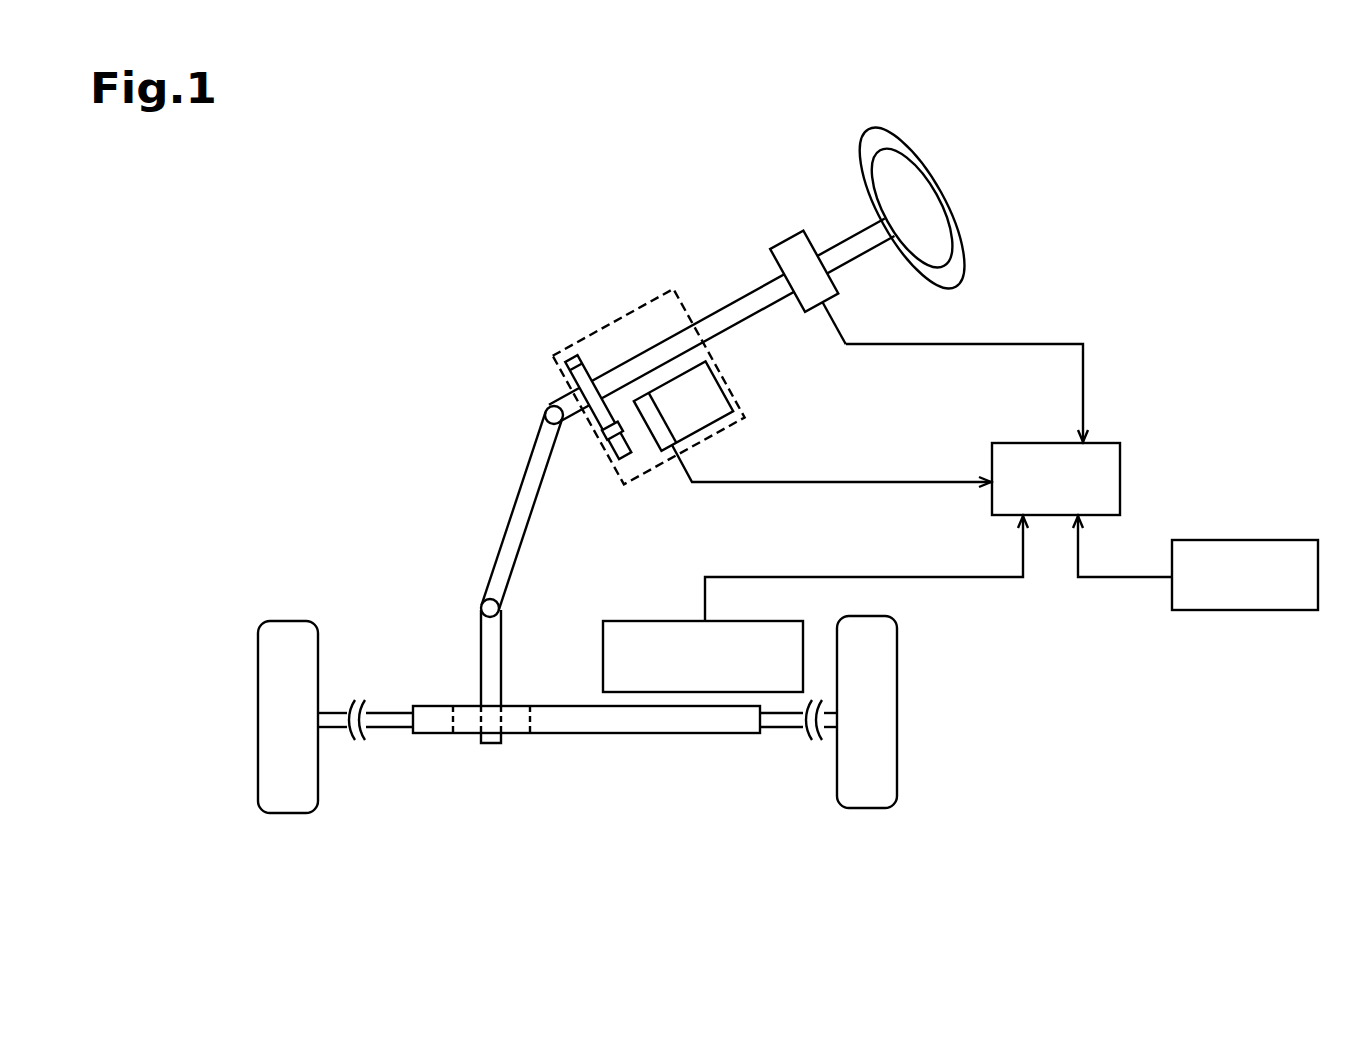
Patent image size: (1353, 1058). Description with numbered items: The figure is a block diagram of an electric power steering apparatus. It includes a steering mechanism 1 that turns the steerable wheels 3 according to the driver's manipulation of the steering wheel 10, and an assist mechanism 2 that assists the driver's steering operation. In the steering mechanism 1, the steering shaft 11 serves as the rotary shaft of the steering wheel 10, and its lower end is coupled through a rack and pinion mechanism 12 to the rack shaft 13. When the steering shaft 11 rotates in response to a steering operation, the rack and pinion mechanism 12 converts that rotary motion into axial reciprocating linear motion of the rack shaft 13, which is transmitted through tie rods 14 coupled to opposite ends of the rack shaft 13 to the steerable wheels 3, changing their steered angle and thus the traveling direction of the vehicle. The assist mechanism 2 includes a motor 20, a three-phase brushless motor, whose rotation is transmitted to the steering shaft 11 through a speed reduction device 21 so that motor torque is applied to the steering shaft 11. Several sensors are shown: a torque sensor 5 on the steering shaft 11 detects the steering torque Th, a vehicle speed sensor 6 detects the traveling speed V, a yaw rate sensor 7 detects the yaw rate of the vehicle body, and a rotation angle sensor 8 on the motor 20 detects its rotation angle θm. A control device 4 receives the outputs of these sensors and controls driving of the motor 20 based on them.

The steering mechanism 1 is at (491, 422).
The assist mechanism 2 is at (642, 307).
The steerable wheels 3 is at (258, 716).
The control device 4 is at (1120, 477).
The torque sensor 5 is at (788, 236).
The vehicle speed sensor 6 is at (633, 620).
The yaw rate sensor 7 is at (1277, 538).
The rotation angle sensor 8 is at (662, 452).
The steering wheel 10 is at (937, 188).
The steering shaft 11 is at (503, 507).
The rack and pinion mechanism 12 is at (530, 733).
The rack shaft 13 is at (602, 733).
The tie rods 14 is at (384, 728).
The motor 20 is at (728, 374).
The speed reduction device 21 is at (598, 428).